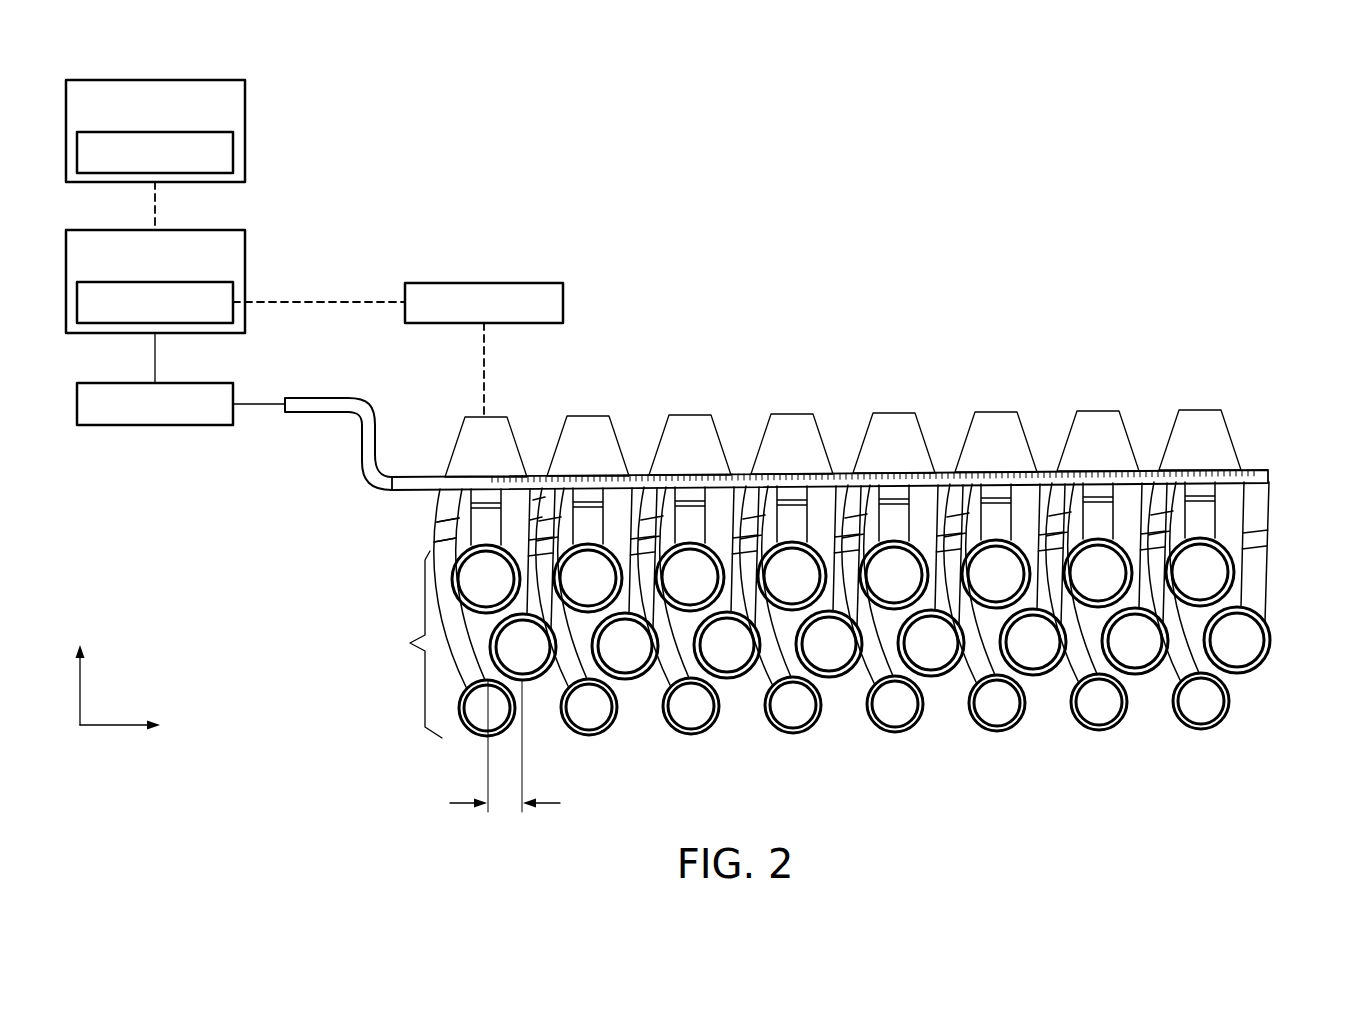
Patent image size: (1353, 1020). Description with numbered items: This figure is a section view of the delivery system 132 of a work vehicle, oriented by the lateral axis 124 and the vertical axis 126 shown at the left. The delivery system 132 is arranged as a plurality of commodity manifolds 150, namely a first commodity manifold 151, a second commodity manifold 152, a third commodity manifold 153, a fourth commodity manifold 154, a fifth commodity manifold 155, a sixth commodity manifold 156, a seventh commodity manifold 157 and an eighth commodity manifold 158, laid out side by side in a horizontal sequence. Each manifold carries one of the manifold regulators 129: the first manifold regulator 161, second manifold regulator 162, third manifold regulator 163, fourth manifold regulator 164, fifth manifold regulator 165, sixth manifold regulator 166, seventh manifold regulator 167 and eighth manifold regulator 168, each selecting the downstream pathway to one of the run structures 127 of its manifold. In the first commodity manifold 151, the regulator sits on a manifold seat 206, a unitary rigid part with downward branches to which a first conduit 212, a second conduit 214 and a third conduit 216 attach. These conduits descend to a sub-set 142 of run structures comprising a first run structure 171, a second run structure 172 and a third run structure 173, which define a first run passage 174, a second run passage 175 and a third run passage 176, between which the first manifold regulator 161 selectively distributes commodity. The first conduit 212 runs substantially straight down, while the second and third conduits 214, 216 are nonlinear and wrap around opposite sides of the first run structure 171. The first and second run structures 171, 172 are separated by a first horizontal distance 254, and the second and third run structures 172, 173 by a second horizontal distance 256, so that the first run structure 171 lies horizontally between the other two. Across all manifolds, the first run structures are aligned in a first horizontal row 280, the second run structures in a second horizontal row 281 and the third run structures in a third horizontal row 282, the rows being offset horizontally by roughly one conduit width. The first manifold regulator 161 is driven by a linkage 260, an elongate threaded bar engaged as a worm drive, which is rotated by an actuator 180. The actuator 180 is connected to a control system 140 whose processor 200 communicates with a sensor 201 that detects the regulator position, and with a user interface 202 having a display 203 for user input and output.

The user interface 202 is at (205, 80).
The display 203 is at (235, 150).
The control system 140 is at (205, 230).
The processor 200 is at (235, 285).
The sensor 201 is at (482, 283).
The actuator 180 is at (120, 426).
The linkage 260 is at (349, 398).
The manifold seat 206 is at (442, 490).
The manifold regulators 129 is at (438, 446).
The delivery system 132 is at (278, 524).
The commodity manifolds 150 is at (973, 316).
The first commodity manifold 151 is at (471, 562).
The second commodity manifold 152 is at (621, 413).
The third commodity manifold 153 is at (723, 413).
The fourth commodity manifold 154 is at (825, 413).
The fifth commodity manifold 155 is at (927, 413).
The sixth commodity manifold 156 is at (1029, 413).
The seventh commodity manifold 157 is at (1131, 413).
The eighth commodity manifold 158 is at (1247, 536).
The first manifold regulator 161 is at (468, 467).
The second manifold regulator 162 is at (570, 466).
The third manifold regulator 163 is at (672, 465).
The fourth manifold regulator 164 is at (774, 464).
The fifth manifold regulator 165 is at (876, 463).
The sixth manifold regulator 166 is at (978, 462).
The seventh manifold regulator 167 is at (1080, 461).
The eighth manifold regulator 168 is at (1182, 460).
The first run structure 171 is at (424, 536).
The second run structure 172 is at (576, 708).
The third run structure 173 is at (480, 755).
The first run passage 174 is at (470, 590).
The second run passage 175 is at (507, 658).
The third run passage 176 is at (476, 742).
The first conduit 212 is at (446, 517).
The second conduit 214 is at (536, 480).
The third conduit 216 is at (424, 548).
The sub-set of run structures 142 is at (402, 644).
The first horizontal distance 254 is at (633, 683).
The second horizontal distance 256 is at (503, 803).
The first horizontal row 280 is at (1252, 548).
The second horizontal row 281 is at (1294, 621).
The third horizontal row 282 is at (1250, 690).
The vertical axis 126 is at (80, 690).
The lateral axis 124 is at (113, 727).
The run structures 127 is at (326, 625).